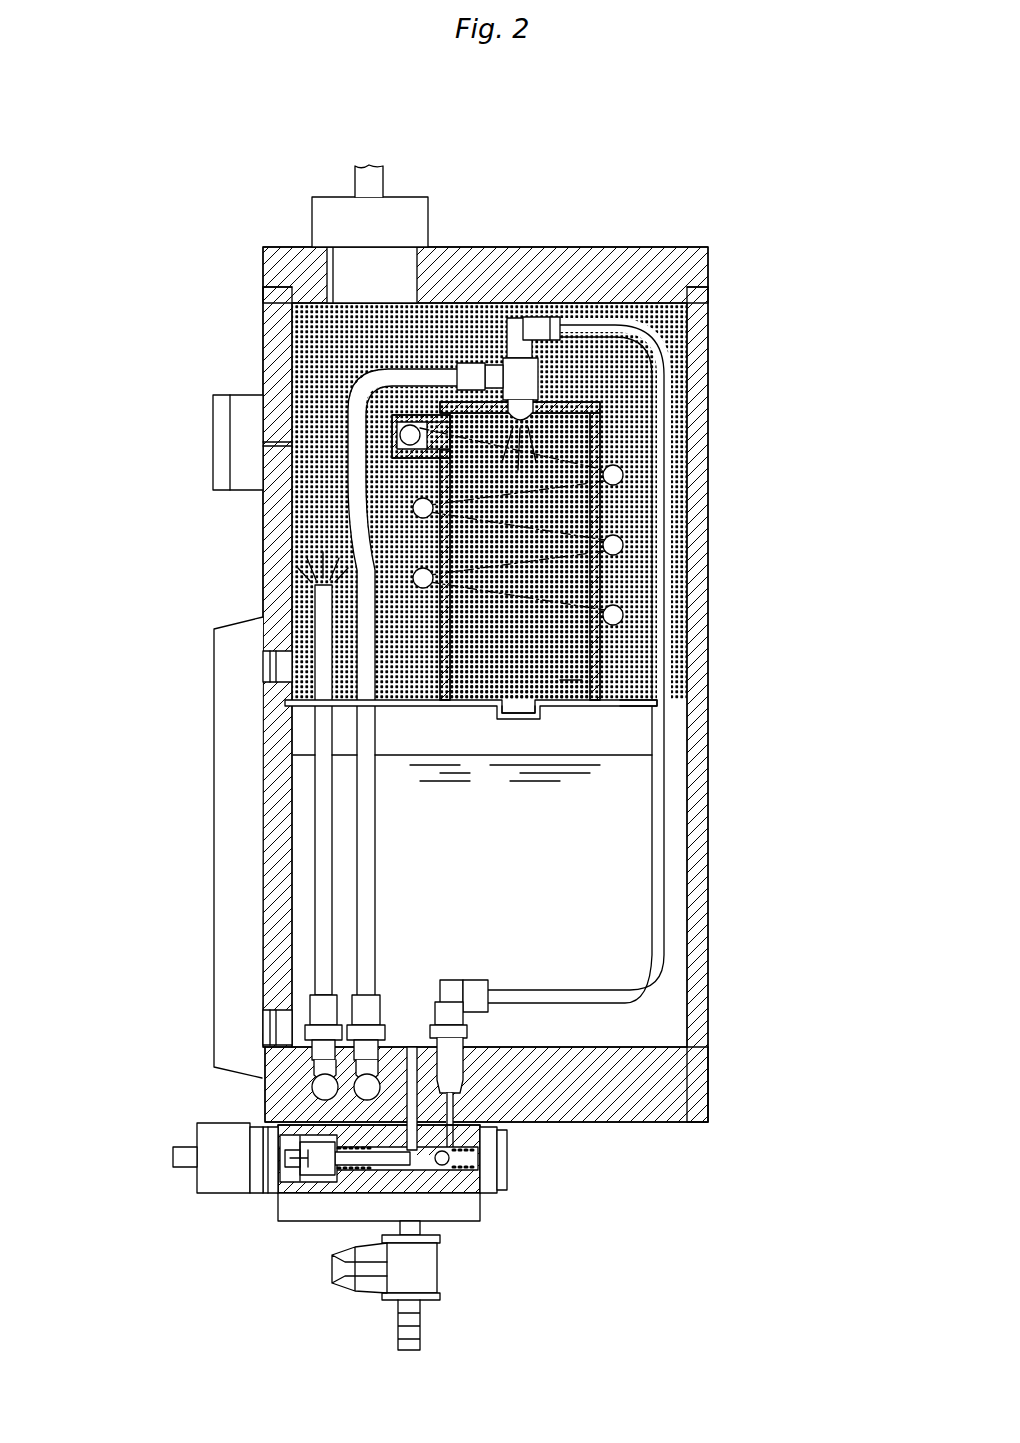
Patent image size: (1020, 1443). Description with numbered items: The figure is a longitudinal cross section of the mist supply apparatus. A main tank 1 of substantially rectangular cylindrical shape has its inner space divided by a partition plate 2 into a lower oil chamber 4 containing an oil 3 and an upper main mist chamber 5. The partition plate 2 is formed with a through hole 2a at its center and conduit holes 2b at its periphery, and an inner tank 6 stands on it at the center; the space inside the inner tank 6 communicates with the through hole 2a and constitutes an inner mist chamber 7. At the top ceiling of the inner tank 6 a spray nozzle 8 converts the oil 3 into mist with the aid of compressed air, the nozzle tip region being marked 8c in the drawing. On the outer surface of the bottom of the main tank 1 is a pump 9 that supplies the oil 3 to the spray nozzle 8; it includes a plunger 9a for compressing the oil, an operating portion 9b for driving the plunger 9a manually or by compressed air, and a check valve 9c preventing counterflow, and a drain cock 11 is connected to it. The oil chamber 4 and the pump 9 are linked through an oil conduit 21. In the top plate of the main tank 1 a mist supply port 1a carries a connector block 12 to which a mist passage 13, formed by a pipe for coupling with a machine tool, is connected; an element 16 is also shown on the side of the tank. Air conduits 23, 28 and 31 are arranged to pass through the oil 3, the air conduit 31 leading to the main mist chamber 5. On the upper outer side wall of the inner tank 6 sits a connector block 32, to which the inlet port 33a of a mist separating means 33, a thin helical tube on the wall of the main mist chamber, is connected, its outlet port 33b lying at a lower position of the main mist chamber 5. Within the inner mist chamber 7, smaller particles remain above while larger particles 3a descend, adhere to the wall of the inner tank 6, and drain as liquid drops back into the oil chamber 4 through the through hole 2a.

The main tank 1 is at (690, 1105).
The mist supply port 1a is at (335, 262).
The partition plate 2 is at (390, 690).
The through hole 2a is at (540, 716).
The conduit holes 2b is at (660, 700).
The oil 3 is at (640, 818).
The larger particles 3a is at (582, 652).
The oil chamber 4 is at (640, 735).
The main mist chamber 5 is at (650, 516).
The inner tank 6 is at (578, 424).
The inner mist chamber 7 is at (602, 411).
The spray nozzle 8 is at (518, 378).
The nozzle tip 8c is at (545, 400).
The pump 9 is at (507, 1165).
The plunger 9a is at (348, 1157).
The operating portion 9b is at (205, 1180).
The check valve 9c is at (445, 1166).
The drain cock 11 is at (410, 1280).
The connector block 12 is at (413, 210).
The mist passage 13 is at (368, 185).
The sensor 16 is at (228, 447).
The oil conduit 21 is at (410, 1128).
The air conduit 23 is at (665, 905).
The air conduit 28 is at (405, 425).
The air conduit 31 is at (320, 815).
The connector block 32 is at (352, 402).
The mist separating means 33 is at (626, 472).
The inlet port 33a is at (405, 440).
The outlet port 33b is at (626, 612).